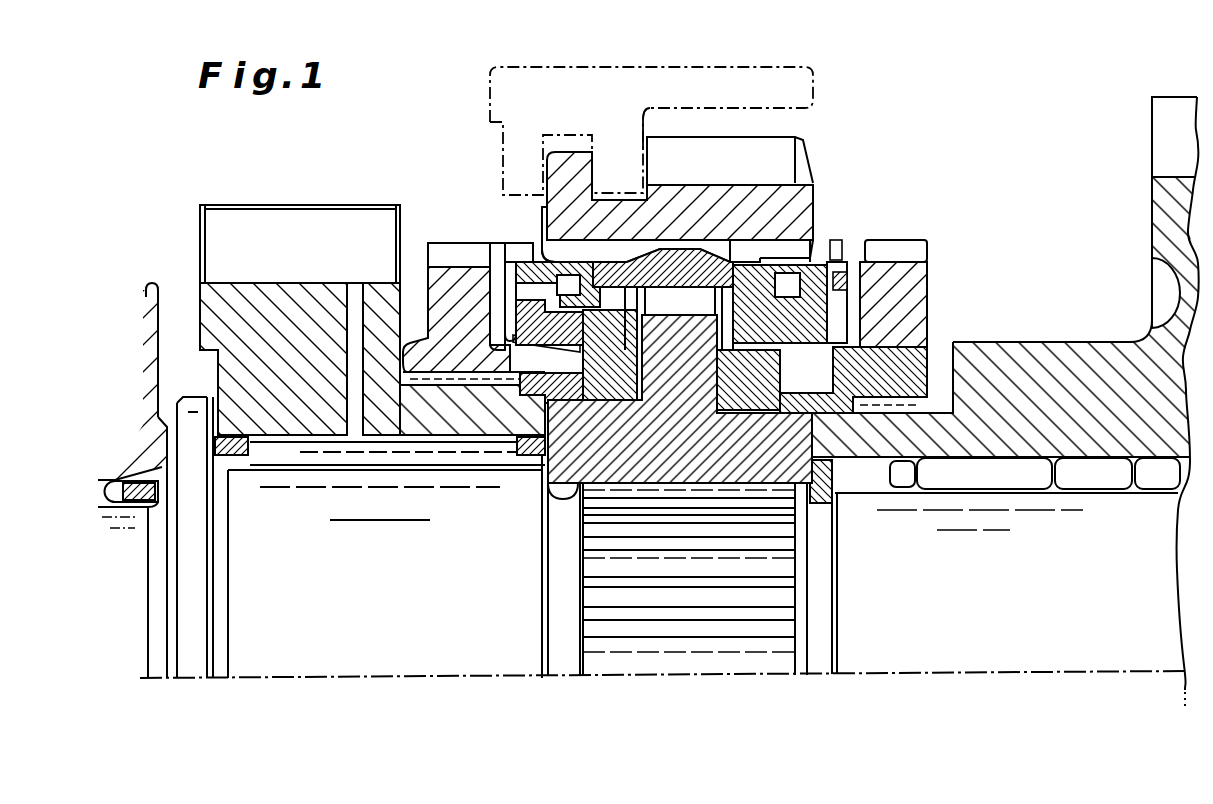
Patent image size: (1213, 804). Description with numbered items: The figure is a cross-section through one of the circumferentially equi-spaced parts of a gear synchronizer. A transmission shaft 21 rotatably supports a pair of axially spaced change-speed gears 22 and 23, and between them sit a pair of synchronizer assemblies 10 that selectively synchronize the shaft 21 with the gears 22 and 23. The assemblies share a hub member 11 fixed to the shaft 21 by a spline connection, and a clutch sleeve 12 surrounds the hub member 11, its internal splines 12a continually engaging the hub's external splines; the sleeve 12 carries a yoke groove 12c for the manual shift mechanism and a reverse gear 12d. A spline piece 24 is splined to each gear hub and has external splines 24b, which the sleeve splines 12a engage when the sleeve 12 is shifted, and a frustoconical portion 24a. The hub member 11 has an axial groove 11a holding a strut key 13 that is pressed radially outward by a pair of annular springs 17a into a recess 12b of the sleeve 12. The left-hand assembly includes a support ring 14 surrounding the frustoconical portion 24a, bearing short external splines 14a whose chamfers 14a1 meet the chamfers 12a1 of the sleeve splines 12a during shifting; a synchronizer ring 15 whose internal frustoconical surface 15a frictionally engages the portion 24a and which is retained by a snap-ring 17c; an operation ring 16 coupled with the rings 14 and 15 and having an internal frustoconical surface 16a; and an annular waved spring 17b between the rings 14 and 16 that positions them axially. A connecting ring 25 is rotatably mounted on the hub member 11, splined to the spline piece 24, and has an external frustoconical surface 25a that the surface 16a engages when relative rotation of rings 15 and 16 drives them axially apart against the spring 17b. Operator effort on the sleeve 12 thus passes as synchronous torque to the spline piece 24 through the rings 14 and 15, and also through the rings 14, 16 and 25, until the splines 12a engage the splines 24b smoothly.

The synchronizer assembly 10 is at (846, 175).
The hub member 11 is at (561, 496).
The axial groove 11a is at (662, 314).
The clutch sleeve 12 is at (812, 133).
The internal splines 12a is at (612, 255).
The chamfers of internal splines 12a1 is at (607, 250).
The recess 12b is at (678, 252).
The yoke groove 12c is at (652, 150).
The reverse gear 12d is at (745, 150).
The strut key 13 is at (738, 248).
The support ring 14 is at (847, 233).
The external splines 14a is at (523, 247).
The chamfers of external splines 14a1 is at (553, 256).
The synchronizer ring 15 is at (863, 309).
The internal frustoconical surface 15a is at (495, 342).
The operation ring 16 is at (755, 365).
The internal frustoconical surface 16a is at (637, 366).
The annular springs 17a is at (735, 250).
The annular waved spring 17b is at (820, 262).
The snap-ring 17c is at (896, 265).
The transmission shaft 21 is at (465, 668).
The change-speed gear 22 is at (290, 225).
The change-speed gear 23 is at (1160, 151).
The spline piece 24 is at (950, 340).
The frustoconical portion 24a is at (520, 378).
The external splines 24b is at (457, 246).
The connecting ring 25 is at (778, 419).
The external frustoconical surface 25a is at (600, 352).